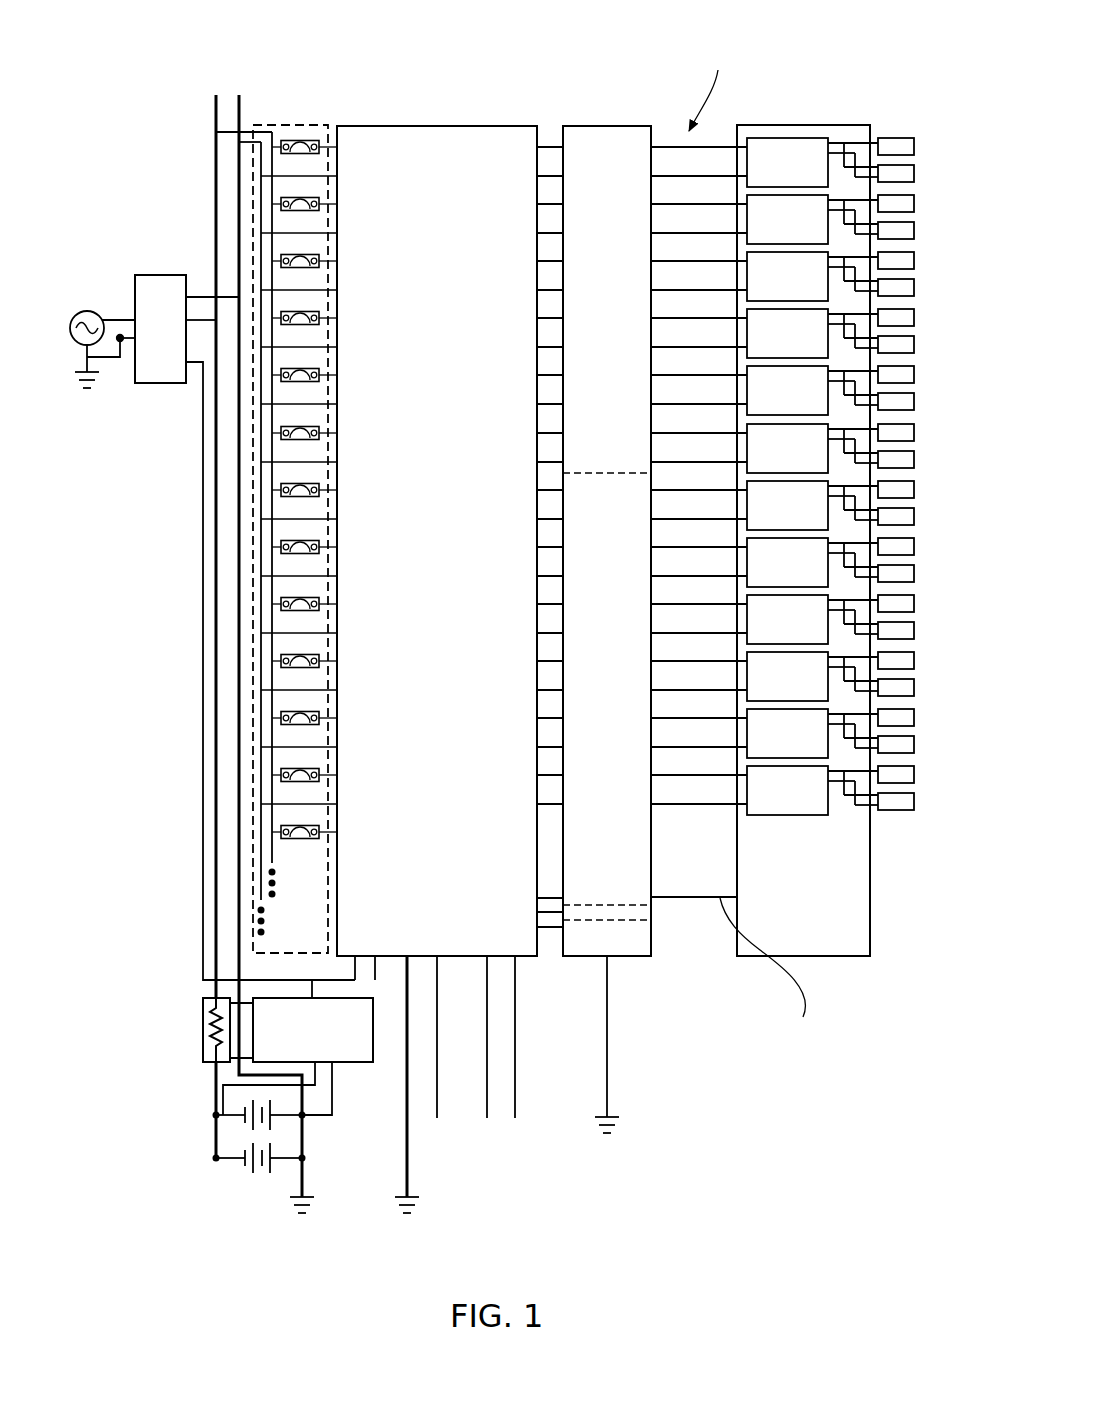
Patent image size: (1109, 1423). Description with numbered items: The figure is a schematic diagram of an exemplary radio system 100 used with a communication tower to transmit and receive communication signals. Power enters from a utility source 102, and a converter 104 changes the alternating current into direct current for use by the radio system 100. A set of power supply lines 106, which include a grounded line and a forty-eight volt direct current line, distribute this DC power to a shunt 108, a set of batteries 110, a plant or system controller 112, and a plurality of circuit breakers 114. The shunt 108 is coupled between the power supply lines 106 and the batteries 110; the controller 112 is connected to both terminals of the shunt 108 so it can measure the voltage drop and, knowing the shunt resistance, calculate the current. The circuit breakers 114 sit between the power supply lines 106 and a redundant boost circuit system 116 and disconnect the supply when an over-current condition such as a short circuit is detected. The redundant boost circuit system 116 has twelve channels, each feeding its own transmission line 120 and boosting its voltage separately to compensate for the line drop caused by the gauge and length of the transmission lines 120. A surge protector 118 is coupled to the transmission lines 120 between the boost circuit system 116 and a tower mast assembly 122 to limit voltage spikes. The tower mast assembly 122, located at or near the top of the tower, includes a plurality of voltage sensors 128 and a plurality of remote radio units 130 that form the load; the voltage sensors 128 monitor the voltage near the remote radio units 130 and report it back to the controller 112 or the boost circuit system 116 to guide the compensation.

The radio system 100 is at (181, 76).
The utility source 102 is at (87, 311).
The converter 104 is at (160, 275).
The power supply lines 106 is at (238, 113).
The shunt 108 is at (203, 1030).
The batteries 110 is at (166, 1188).
The controller 112 is at (353, 1062).
The circuit breakers 114 is at (312, 125).
The redundant boost circuit system 116 is at (432, 126).
The surge protector 118 is at (593, 126).
The transmission lines 120 is at (712, 820).
The tower mast assembly 122 is at (790, 125).
The voltage sensors 128 is at (790, 813).
The remote radio units 130 is at (895, 811).